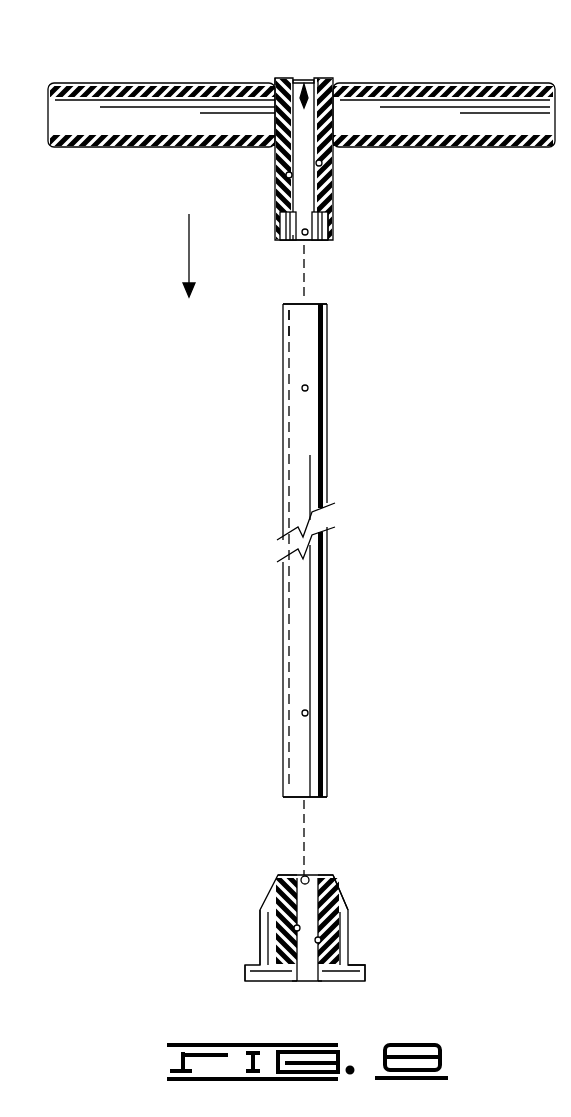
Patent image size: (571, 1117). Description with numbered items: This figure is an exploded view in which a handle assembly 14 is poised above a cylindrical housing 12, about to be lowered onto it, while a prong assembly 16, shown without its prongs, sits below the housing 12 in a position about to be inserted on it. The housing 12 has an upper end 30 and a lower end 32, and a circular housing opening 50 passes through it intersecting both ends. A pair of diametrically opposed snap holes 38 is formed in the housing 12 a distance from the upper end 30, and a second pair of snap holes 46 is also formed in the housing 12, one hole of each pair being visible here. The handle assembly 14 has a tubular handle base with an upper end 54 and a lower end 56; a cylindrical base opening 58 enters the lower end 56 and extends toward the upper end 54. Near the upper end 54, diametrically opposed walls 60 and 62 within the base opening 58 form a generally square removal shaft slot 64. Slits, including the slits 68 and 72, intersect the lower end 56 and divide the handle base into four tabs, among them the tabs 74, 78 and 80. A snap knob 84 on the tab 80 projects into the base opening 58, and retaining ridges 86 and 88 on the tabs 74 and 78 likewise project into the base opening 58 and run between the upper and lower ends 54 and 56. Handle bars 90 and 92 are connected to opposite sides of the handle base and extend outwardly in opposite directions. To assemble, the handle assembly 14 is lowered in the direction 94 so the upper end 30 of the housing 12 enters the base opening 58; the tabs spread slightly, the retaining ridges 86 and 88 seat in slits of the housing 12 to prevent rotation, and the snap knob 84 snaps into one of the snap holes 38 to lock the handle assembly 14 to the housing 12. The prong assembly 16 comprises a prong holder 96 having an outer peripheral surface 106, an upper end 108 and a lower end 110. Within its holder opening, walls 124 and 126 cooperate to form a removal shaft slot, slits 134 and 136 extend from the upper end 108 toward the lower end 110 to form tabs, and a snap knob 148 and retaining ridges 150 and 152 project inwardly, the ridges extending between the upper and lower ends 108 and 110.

The housing 12 is at (334, 639).
The handle assembly 14 is at (340, 190).
The prong assembly 16 is at (356, 904).
The upper end 30 is at (292, 304).
The lower end 32 is at (320, 798).
The snap holes 38 is at (309, 388).
The snap holes 46 is at (308, 713).
The housing opening 50 is at (289, 332).
The upper end 54 is at (322, 80).
The lower end 56 is at (320, 236).
The base opening 58 is at (322, 222).
The wall 60 is at (290, 80).
The wall 62 is at (306, 92).
The removal shaft slot 64 is at (303, 84).
The slit 68 is at (290, 238).
The slit 72 is at (310, 240).
The tab 74 is at (280, 232).
The tab 78 is at (326, 232).
The tab 80 is at (306, 241).
The snap knob 84 is at (300, 241).
The retaining ridge 86 is at (286, 173).
The retaining ridge 88 is at (322, 167).
The handle bar 90 is at (100, 148).
The handle bar 92 is at (470, 148).
The direction 94 is at (186, 250).
The prong holder 96 is at (262, 912).
The outer peripheral surface 106 is at (366, 975).
The upper end 108 is at (336, 880).
The lower end 110 is at (248, 978).
The wall 124 is at (296, 981).
The wall 126 is at (316, 981).
The slit 134 is at (285, 876).
The slit 136 is at (322, 876).
The snap knob 148 is at (304, 875).
The retaining ridge 150 is at (294, 929).
The retaining ridge 152 is at (320, 940).